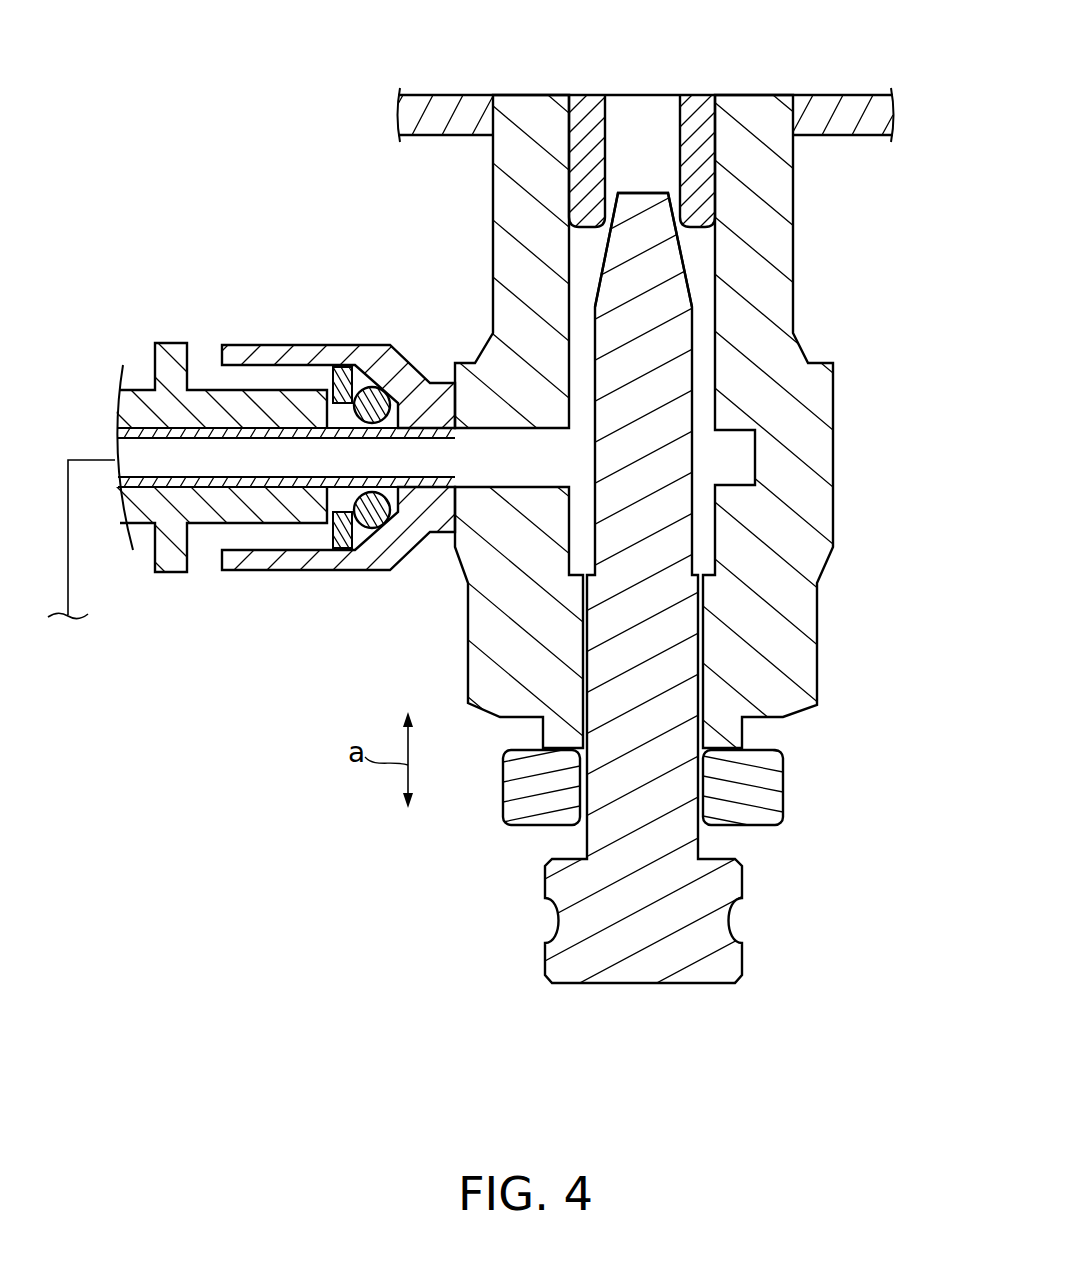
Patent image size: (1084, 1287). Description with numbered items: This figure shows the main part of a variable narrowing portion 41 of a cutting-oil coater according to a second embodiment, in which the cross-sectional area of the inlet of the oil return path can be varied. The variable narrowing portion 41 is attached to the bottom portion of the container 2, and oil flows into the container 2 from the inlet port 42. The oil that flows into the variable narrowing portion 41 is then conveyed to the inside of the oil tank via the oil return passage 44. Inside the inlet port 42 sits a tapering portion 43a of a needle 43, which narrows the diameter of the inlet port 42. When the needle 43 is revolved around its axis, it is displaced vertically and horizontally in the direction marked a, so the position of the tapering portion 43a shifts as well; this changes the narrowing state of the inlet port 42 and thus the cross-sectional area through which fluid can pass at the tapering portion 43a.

The container 2 is at (818, 97).
The variable narrowing portion 41 is at (850, 452).
The inlet port 42 is at (642, 97).
The needle 43 is at (720, 918).
The tapering portion 43a is at (600, 254).
The oil return passage 44 is at (68, 557).